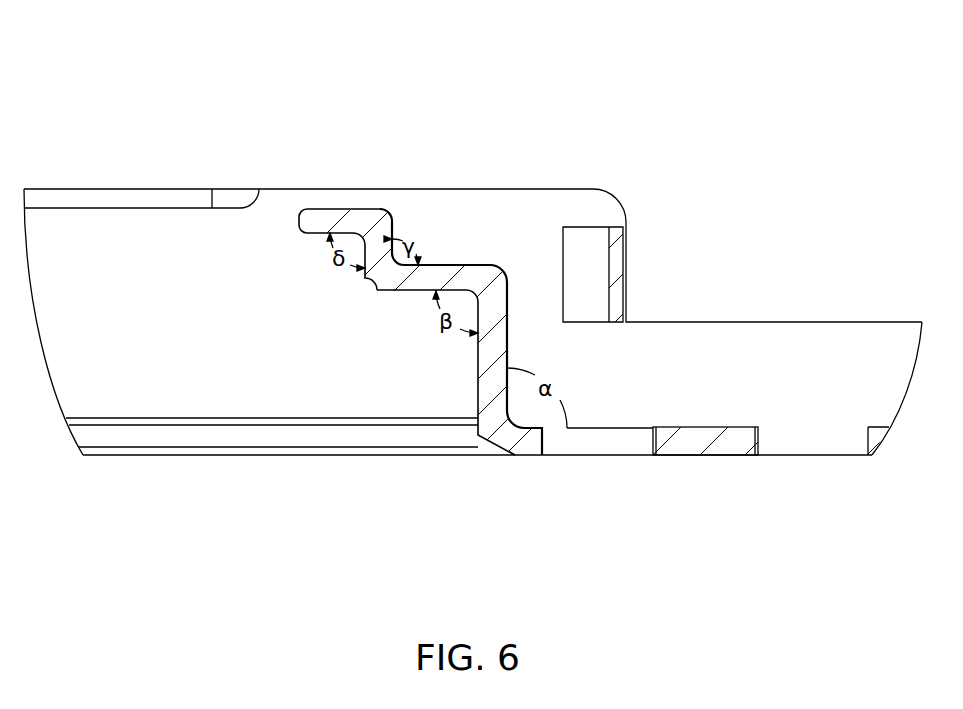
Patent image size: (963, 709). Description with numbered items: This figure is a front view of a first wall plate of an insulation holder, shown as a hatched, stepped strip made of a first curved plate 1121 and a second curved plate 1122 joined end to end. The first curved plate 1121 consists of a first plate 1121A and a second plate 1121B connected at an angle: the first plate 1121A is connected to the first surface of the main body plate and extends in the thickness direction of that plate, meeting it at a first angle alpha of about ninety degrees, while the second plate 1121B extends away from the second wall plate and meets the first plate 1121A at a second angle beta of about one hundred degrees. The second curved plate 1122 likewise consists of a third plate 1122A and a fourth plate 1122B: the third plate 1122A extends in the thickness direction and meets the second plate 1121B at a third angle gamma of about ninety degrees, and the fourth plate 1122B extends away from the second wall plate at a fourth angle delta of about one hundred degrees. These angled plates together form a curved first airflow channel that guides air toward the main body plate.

The second curved plate 1122 is at (342, 234).
The third plate 1122A is at (395, 232).
The fourth plate 1122B is at (353, 222).
The first curved plate 1121 is at (497, 404).
The first plate 1121A is at (490, 353).
The second plate 1121B is at (437, 280).